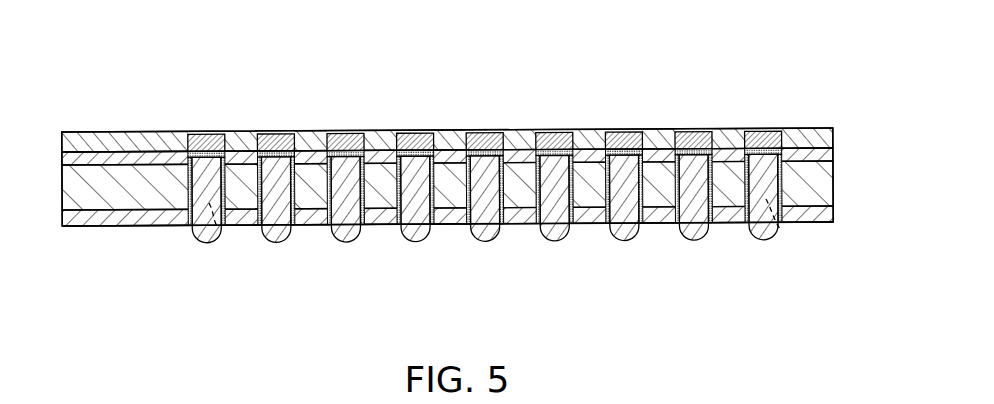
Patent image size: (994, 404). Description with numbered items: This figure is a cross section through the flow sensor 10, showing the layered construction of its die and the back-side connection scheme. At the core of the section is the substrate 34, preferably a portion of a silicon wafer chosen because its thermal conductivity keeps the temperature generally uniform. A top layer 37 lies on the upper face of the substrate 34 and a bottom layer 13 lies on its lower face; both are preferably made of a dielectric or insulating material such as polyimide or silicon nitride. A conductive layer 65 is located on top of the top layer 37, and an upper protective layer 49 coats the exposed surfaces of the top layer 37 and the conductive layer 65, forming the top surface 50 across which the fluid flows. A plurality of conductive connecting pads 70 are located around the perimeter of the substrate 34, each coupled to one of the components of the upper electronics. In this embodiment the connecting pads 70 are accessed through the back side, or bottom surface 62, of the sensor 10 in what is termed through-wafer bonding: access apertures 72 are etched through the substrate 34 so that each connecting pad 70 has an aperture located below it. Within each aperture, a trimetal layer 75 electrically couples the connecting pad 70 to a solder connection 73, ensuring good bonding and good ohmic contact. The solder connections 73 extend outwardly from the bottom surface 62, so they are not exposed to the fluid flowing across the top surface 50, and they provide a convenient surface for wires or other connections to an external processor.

The flow sensor 10 is at (80, 102).
The top surface 50 is at (103, 131).
The upper protective layer 49 is at (148, 131).
The connecting pad 70 is at (205, 134).
The trimetal layer 75 is at (352, 148).
The conductive layer 65 is at (553, 134).
The top layer 37 is at (835, 151).
The substrate 34 is at (834, 178).
The bottom layer 13 is at (835, 213).
The bottom surface 62 is at (95, 226).
The solder connection 73 is at (193, 241).
The access aperture 72 is at (217, 226).